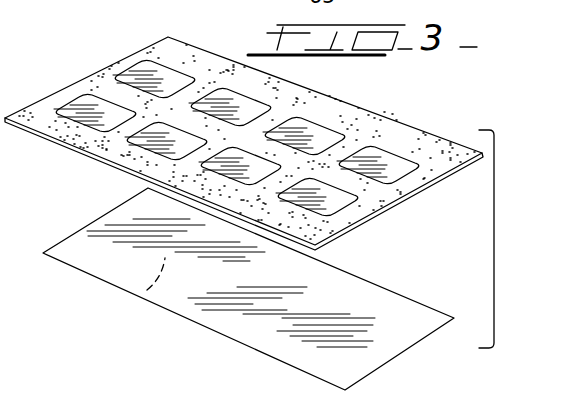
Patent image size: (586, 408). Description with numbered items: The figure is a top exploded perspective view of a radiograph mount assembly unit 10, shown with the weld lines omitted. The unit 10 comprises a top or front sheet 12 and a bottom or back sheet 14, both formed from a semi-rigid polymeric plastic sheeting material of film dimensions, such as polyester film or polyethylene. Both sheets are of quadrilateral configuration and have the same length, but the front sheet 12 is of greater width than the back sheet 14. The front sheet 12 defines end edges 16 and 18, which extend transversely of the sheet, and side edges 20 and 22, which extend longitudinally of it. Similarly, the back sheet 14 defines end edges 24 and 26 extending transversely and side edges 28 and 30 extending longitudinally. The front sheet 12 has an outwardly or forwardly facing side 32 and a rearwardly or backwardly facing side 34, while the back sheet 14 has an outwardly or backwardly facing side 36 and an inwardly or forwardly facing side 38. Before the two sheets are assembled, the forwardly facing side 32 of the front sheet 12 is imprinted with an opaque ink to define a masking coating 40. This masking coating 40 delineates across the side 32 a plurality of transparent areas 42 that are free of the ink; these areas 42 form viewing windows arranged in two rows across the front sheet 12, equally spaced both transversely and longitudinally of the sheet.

The radiograph mount assembly unit 10 is at (197, 350).
The front sheet 12 is at (363, 108).
The back sheet 14 is at (173, 310).
The end edge 16 is at (113, 64).
The end edge 18 is at (421, 186).
The side edge 20 is at (115, 170).
The side edge 22 is at (327, 97).
The end edge 24 is at (85, 228).
The end edge 26 is at (387, 362).
The side edge 28 is at (293, 361).
The side edge 30 is at (386, 288).
The forwardly facing side 32 is at (113, 90).
The rearwardly facing side 34 is at (93, 163).
The backwardly facing side 36 is at (147, 290).
The forwardly facing side 38 is at (110, 262).
The masking coating 40 is at (386, 117).
The transparent areas 42 is at (147, 77).